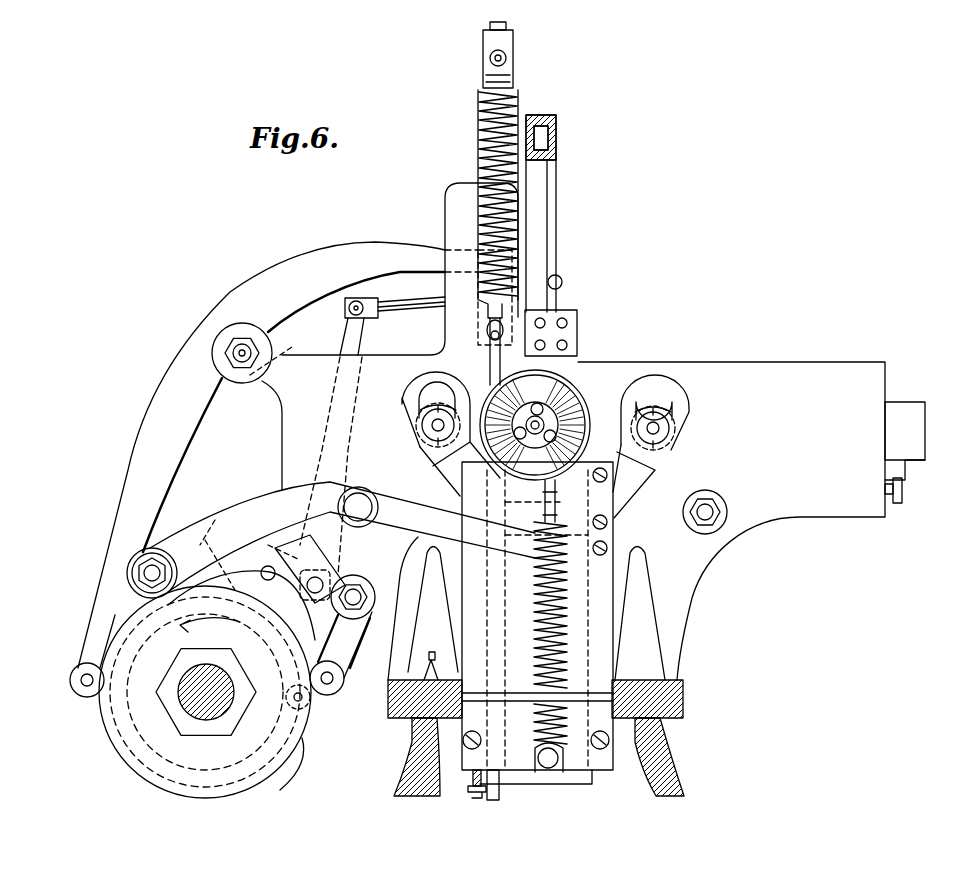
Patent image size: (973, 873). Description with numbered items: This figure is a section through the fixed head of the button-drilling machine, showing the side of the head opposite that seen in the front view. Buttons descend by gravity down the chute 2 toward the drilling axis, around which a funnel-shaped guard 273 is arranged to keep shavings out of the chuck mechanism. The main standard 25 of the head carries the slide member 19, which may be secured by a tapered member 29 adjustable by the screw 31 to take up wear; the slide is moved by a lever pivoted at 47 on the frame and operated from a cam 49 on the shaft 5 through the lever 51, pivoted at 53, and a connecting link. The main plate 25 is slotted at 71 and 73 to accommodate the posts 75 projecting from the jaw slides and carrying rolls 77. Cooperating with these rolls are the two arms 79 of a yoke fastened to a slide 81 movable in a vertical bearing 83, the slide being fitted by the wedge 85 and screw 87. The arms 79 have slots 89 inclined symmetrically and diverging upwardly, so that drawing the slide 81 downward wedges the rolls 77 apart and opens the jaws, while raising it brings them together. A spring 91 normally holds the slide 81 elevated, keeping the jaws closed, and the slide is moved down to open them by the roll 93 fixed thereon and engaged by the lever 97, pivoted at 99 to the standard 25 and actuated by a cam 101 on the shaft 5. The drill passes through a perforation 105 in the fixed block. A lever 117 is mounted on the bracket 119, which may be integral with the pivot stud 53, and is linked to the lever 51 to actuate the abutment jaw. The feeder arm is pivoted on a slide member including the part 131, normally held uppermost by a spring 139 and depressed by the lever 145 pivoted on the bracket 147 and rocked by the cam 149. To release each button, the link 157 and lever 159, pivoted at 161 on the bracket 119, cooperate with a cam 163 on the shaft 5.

The chute 2 is at (545, 183).
The shaft 5 is at (195, 690).
The slide member 19 is at (912, 405).
The main standard 25 is at (290, 432).
The tapered member 29 is at (908, 470).
The screw 31 is at (902, 500).
The pivot 47 is at (718, 505).
The cam 49 is at (305, 768).
The lever 51 is at (340, 655).
The pivot stud 53 is at (370, 590).
The slot 71 is at (640, 410).
The slot 73 is at (420, 410).
The post 75 is at (438, 428).
The roll 77 is at (422, 422).
The arm 79 is at (432, 462).
The slide 81 is at (590, 787).
The vertical bearing 83 is at (598, 660).
The wedge 85 is at (505, 793).
The screw 87 is at (468, 790).
The slot 89 is at (428, 388).
The spring 91 is at (533, 615).
The roll 93 is at (535, 575).
The lever 97 is at (402, 530).
The pivot 99 is at (358, 490).
The cam 101 is at (300, 632).
The perforation 105 is at (498, 400).
The lever 117 is at (278, 548).
The bracket 119 is at (300, 600).
The slide member part 131 is at (478, 105).
The spring 139 is at (480, 150).
The lever 145 is at (285, 297).
The bracket 147 is at (238, 340).
The cam 149 is at (205, 540).
The link 157 is at (422, 302).
The lever 159 is at (352, 333).
The pivot 161 is at (322, 580).
The cam 163 is at (140, 750).
The funnel-shaped guard 273 is at (572, 398).